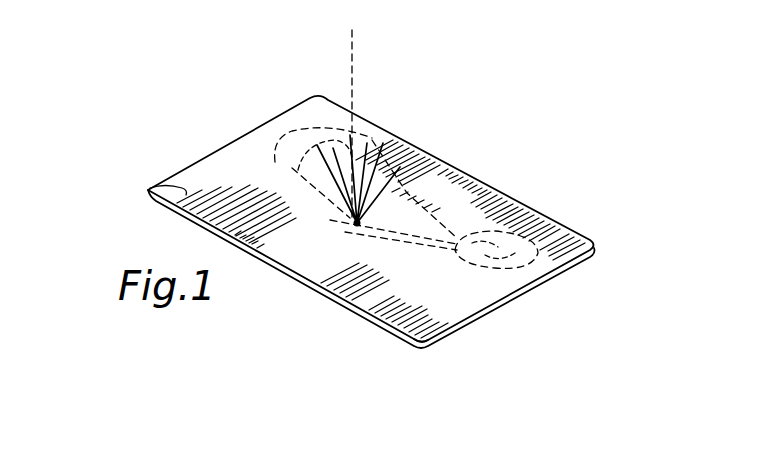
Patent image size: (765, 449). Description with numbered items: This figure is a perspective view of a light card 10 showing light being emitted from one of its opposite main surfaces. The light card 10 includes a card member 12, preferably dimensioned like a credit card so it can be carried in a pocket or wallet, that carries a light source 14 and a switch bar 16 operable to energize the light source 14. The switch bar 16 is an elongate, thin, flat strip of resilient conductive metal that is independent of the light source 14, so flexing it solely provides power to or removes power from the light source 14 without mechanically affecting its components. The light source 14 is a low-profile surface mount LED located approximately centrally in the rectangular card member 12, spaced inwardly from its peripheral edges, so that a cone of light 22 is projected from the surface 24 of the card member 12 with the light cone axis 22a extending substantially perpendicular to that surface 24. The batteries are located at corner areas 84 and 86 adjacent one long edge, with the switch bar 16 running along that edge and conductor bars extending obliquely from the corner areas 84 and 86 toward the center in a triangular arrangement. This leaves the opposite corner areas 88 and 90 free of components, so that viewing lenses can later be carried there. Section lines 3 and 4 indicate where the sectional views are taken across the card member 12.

The light card 10 is at (540, 62).
The card member 12 is at (593, 243).
The light source 14 is at (330, 237).
The switch bar 16 is at (462, 170).
The cone of light 22 is at (395, 118).
The light cone axis 22a is at (370, 50).
The surface 24 is at (380, 287).
The corner area 84 is at (565, 245).
The corner area 86 is at (306, 118).
The corner area 88 is at (432, 318).
The corner area 90 is at (148, 190).
The section line 3 is at (257, 117).
The section line 4 is at (182, 166).